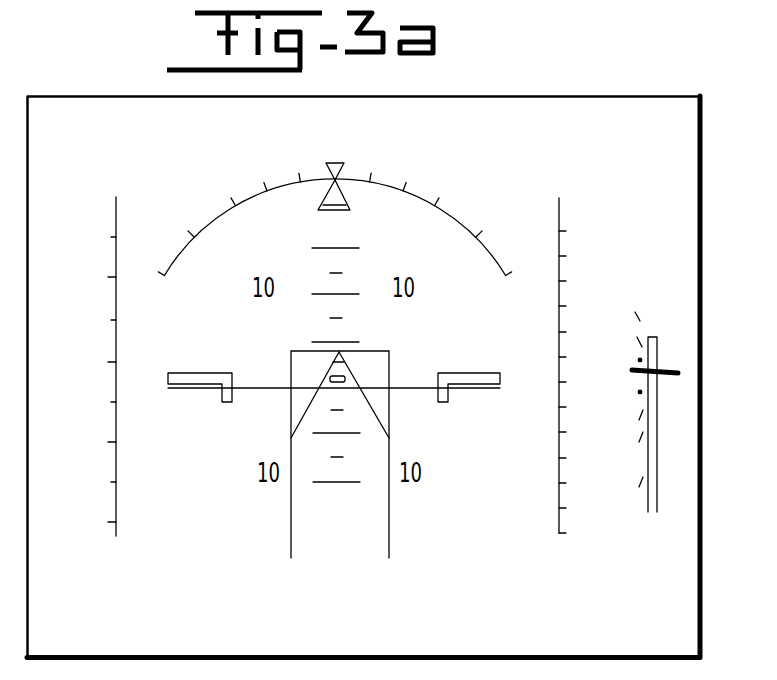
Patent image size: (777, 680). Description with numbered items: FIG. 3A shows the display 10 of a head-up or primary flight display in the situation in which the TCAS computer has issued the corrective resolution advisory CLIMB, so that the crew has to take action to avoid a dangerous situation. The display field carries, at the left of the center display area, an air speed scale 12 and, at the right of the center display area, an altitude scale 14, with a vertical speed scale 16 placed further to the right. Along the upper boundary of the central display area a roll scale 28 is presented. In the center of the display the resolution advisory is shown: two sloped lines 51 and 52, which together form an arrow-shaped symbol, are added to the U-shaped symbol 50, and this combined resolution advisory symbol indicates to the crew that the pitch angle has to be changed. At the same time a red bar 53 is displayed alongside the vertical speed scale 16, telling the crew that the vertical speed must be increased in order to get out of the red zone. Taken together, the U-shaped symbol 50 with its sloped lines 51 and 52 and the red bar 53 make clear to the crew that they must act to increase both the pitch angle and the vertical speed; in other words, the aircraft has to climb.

The head-up display 10 is at (637, 107).
The air speed scale 12 is at (115, 212).
The altitude scale 14 is at (559, 210).
The vertical speed scale 16 is at (642, 282).
The roll scale 28 is at (420, 200).
The U-shaped symbol 50 is at (292, 546).
The sloped line 51 is at (297, 414).
The sloped line 52 is at (380, 412).
The red bar 53 is at (655, 450).